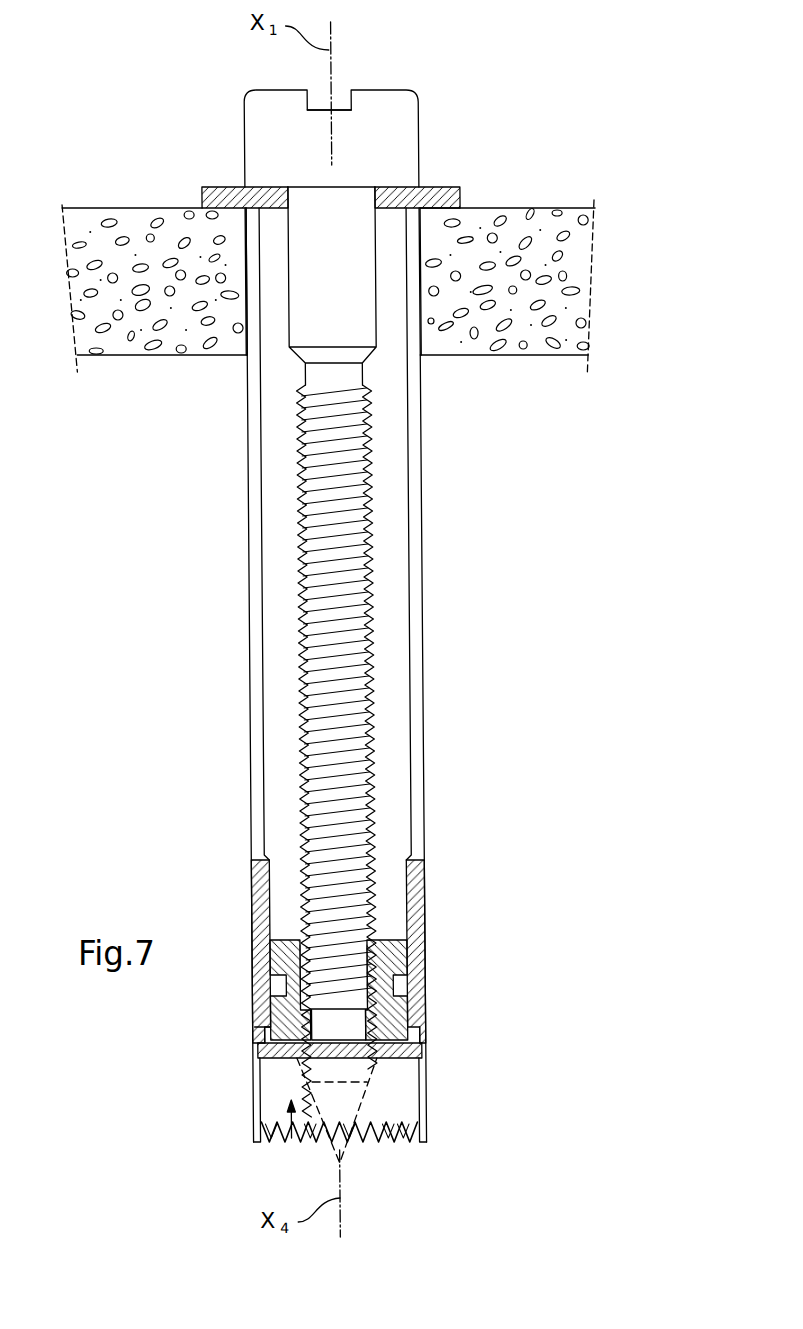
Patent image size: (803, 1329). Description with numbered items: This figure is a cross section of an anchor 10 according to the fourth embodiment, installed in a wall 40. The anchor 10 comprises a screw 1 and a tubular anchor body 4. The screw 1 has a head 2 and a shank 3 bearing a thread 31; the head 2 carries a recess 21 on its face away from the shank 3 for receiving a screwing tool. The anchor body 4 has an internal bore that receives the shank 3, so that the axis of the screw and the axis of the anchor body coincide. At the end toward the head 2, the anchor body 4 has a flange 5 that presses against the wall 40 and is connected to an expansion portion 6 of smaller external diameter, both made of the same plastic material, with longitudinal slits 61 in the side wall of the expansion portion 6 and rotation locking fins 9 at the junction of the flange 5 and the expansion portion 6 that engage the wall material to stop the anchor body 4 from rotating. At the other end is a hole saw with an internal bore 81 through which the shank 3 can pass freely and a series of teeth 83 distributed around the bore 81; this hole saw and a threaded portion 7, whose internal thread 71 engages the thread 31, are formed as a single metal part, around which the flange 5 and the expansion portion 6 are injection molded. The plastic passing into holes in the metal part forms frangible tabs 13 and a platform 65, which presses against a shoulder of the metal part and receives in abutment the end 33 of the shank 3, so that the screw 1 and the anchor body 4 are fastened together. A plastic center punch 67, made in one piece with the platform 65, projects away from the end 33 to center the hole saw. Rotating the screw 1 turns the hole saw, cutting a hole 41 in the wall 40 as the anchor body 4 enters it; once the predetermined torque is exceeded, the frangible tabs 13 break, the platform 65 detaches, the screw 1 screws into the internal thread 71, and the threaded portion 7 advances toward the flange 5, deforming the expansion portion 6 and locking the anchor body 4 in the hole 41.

The screw 1 is at (296, 465).
The head 2 is at (398, 121).
The shank 3 is at (287, 233).
The anchor body 4 is at (247, 596).
The flange 5 is at (420, 196).
The expansion portion 6 is at (411, 878).
The threaded portion 7 is at (387, 952).
The rotation locking fins 9 is at (246, 268).
The anchor 10 is at (175, 493).
The frangible tabs 13 is at (248, 1032).
The recess 21 is at (341, 97).
The thread 31 is at (370, 540).
The end of the shank 33 is at (345, 1022).
The wall 40 is at (573, 335).
The hole 41 is at (418, 356).
The longitudinal slits 61 is at (247, 750).
The platform 65 is at (386, 1049).
The center punch 67 is at (335, 1097).
The internal thread 71 is at (311, 977).
The internal bore 81 is at (284, 1138).
The teeth 83 is at (392, 1142).